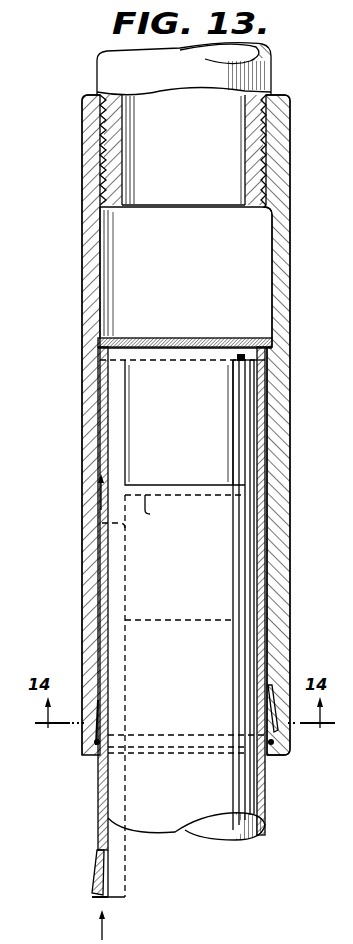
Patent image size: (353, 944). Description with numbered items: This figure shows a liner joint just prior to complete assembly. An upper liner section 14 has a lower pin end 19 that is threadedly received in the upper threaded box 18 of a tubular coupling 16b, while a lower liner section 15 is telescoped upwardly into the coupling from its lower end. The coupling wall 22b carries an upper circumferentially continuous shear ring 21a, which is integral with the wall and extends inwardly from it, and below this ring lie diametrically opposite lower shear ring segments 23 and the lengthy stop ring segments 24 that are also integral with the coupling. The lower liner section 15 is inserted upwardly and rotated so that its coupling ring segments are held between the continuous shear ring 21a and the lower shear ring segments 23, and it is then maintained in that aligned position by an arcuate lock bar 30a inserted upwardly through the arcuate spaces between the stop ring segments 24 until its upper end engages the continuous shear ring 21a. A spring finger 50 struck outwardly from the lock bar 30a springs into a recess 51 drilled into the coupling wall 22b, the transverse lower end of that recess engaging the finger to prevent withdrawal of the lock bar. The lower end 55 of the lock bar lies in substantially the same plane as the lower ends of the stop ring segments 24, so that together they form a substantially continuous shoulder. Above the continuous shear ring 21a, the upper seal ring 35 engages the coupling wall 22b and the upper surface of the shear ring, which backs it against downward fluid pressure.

The upper liner section 14 is at (269, 68).
The upper threaded box 18 is at (290, 143).
The lower pin end 19 is at (105, 178).
The coupling wall 22b is at (262, 300).
The upper seal ring 35 is at (200, 339).
The upper circumferentially continuous shear ring 21a is at (273, 352).
The tubular coupling 16b is at (283, 398).
The stop ring segments 24 is at (140, 410).
The lower shear ring segments 23 is at (159, 512).
The lock bar 30a is at (273, 563).
The lower liner section 15 is at (262, 811).
The recess 51 is at (96, 718).
The spring finger 50 is at (272, 702).
The lower end of lock bar 55 is at (276, 742).